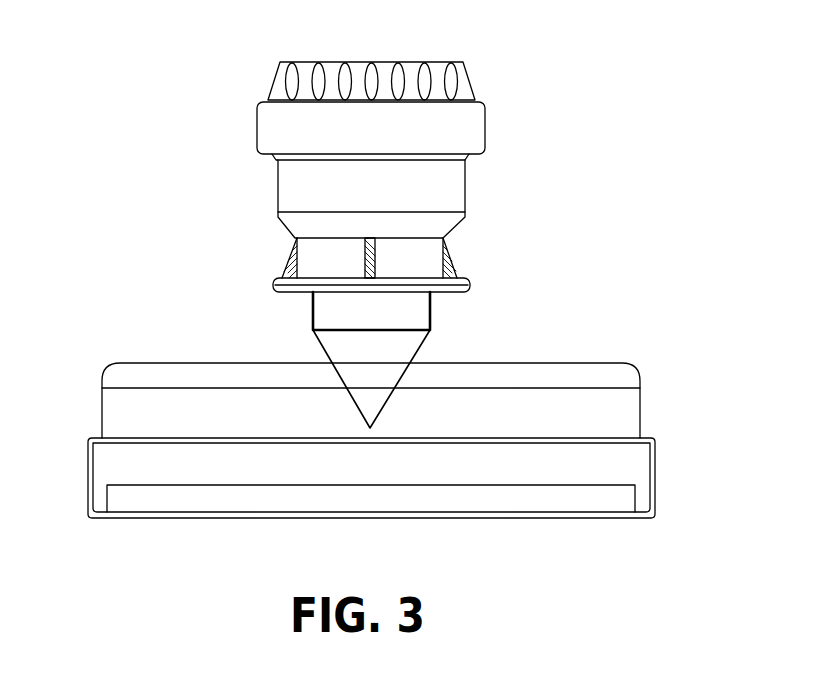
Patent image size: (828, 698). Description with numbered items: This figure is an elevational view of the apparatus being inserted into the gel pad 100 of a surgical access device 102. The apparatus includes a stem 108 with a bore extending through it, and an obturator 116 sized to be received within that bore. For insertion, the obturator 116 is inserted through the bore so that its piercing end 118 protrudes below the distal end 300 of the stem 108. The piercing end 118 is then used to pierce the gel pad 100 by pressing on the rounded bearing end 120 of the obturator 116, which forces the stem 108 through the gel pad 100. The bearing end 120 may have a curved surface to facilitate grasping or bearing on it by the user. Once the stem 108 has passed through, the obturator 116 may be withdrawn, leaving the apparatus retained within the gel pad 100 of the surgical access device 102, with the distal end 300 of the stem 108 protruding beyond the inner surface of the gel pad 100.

The gel pad 100 is at (372, 405).
The surgical access device 102 is at (107, 339).
The stem 108 is at (278, 180).
The obturator 116 is at (397, 80).
The piercing end 118 is at (370, 432).
The bearing end 120 is at (330, 62).
The distal end 300 is at (456, 304).